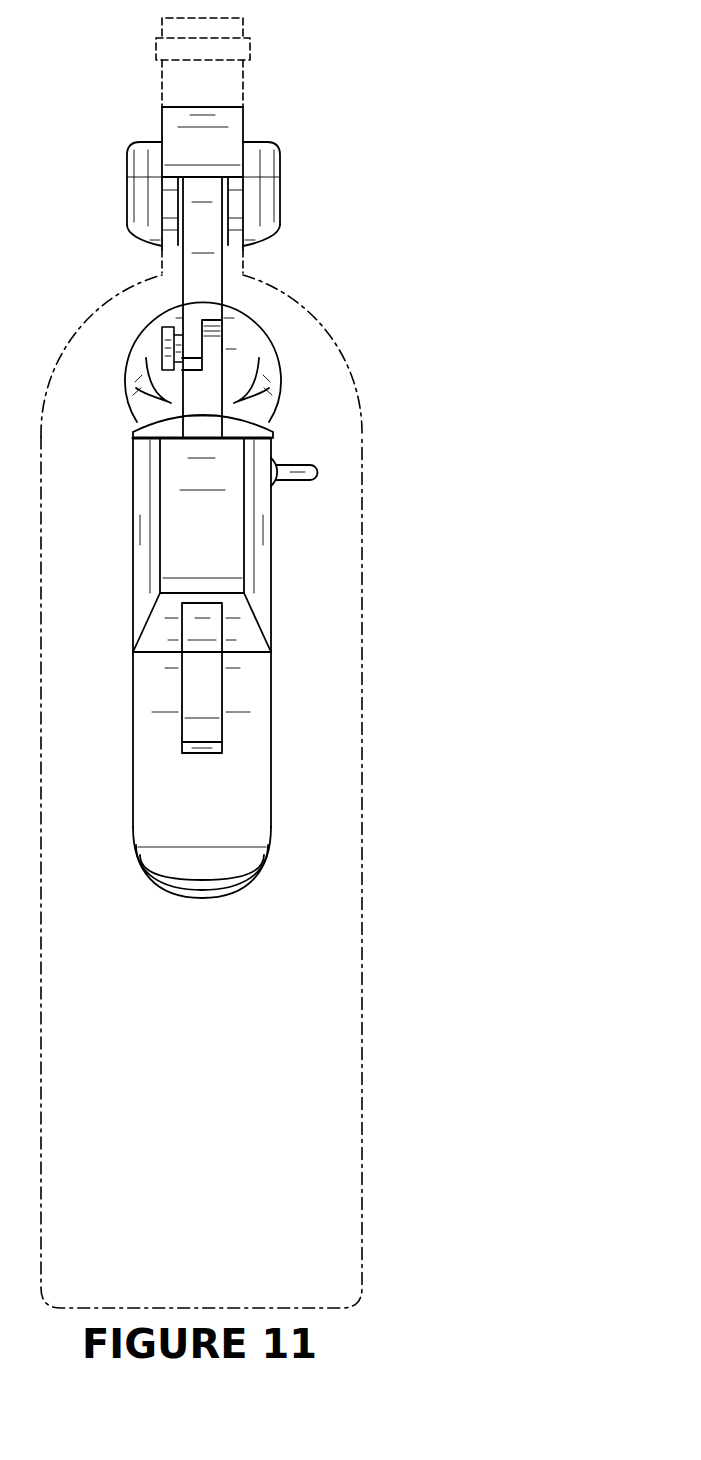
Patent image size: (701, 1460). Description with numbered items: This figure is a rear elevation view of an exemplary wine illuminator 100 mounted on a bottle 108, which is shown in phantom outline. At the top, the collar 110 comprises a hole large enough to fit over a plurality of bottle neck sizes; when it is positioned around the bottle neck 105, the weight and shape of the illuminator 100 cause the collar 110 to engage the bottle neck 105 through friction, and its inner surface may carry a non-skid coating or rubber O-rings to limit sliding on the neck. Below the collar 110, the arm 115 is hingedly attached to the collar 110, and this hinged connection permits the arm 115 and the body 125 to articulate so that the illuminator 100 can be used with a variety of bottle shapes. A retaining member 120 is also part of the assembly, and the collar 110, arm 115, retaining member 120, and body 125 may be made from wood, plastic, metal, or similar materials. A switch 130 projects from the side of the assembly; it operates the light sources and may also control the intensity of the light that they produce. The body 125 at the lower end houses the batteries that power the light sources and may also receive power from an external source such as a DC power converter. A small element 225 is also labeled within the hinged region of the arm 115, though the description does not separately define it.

The wine illuminator 100 is at (304, 160).
The bottle neck 105 is at (158, 92).
The bottle 108 is at (341, 685).
The collar 110 is at (120, 177).
The arm 115 is at (193, 707).
The retaining member 120 is at (178, 528).
The body 125 is at (158, 783).
The switch 130 is at (306, 487).
The latch member 225 is at (160, 347).